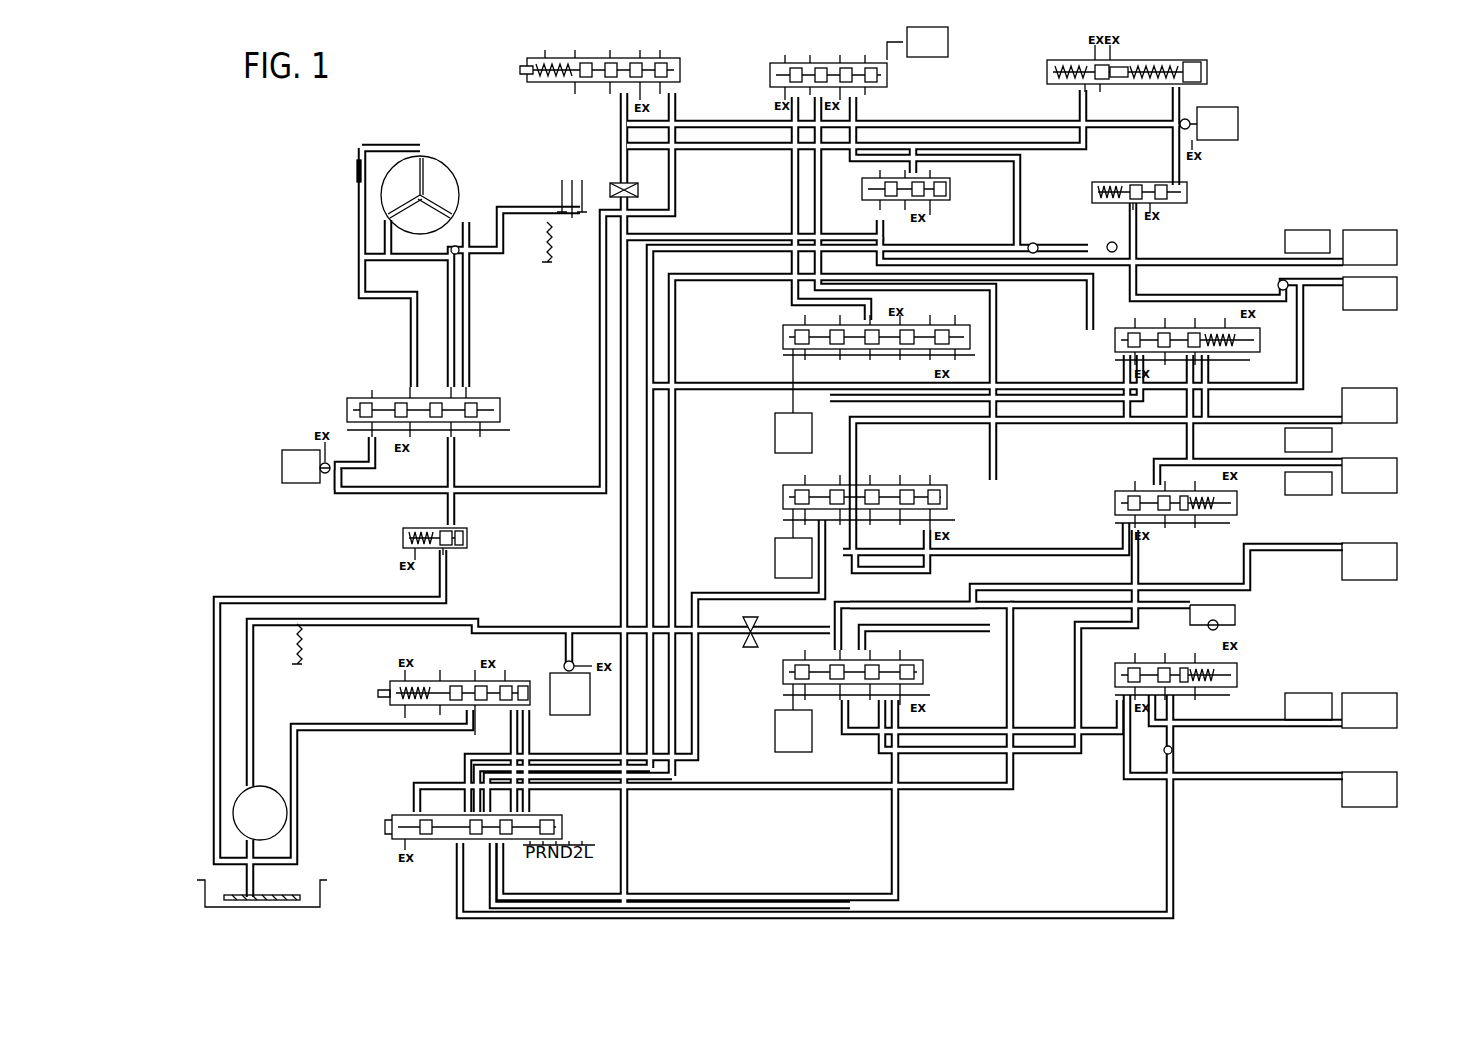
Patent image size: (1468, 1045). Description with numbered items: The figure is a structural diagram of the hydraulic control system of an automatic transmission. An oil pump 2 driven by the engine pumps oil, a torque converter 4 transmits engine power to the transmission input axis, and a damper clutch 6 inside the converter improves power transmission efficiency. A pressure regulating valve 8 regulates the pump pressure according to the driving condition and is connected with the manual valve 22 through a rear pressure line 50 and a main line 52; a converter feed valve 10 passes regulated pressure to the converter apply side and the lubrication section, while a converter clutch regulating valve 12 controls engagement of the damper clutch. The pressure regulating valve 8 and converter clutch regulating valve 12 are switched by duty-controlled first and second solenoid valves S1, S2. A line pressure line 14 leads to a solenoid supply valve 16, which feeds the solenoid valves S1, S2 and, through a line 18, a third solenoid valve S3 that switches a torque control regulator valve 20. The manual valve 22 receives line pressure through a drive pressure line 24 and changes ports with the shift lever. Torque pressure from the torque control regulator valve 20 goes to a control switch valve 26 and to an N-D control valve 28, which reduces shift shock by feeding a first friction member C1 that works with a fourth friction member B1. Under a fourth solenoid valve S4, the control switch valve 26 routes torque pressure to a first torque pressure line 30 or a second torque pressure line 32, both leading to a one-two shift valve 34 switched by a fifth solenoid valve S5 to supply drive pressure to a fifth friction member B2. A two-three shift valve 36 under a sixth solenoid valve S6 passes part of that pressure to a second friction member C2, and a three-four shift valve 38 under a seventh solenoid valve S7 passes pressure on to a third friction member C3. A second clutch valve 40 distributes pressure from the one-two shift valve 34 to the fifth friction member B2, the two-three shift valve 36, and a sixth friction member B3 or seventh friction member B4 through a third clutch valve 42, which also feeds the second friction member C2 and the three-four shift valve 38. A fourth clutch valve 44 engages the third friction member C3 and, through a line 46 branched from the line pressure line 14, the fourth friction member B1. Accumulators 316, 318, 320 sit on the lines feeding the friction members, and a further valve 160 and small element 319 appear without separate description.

The oil pump 2 is at (233, 815).
The torque converter 4 is at (450, 152).
The damper clutch 6 is at (358, 180).
The pressure regulating valve 8 is at (388, 693).
The converter feed valve 10 is at (400, 540).
The converter clutch regulating valve 12 is at (505, 412).
The line pressure line 14 is at (620, 300).
The solenoid supply valve 16 is at (690, 74).
The line 18 is at (987, 121).
The torque control regulator valve 20 is at (1212, 73).
The manual valve 22 is at (392, 827).
The drive pressure line 24 is at (603, 764).
The control switch valve 26 is at (900, 75).
The N-D control valve 28 is at (955, 188).
The first torque pressure line 30 is at (790, 165).
The second torque pressure line 32 is at (823, 165).
The 1-2 shift valve 34 is at (780, 338).
The 2-3 shift valve 36 is at (780, 500).
The 3-4 shift valve 38 is at (780, 672).
The second clutch valve 40 is at (1112, 340).
The third clutch valve 42 is at (1112, 502).
The fourth clutch valve 44 is at (1245, 665).
The line 46 is at (1175, 850).
The rear pressure line 50 is at (676, 530).
The main line 52 is at (531, 737).
The accumulator control valve 160 is at (1192, 193).
The accumulator 316 is at (1310, 230).
The accumulator 318 is at (1333, 443).
The accumulator 319 is at (1307, 496).
The accumulator 320 is at (1307, 693).
The first solenoid valve S1 is at (571, 690).
The second solenoid valve S2 is at (306, 462).
The third solenoid valve S3 is at (1214, 128).
The fourth solenoid valve S4 is at (927, 42).
The fifth solenoid valve S5 is at (793, 433).
The sixth solenoid valve S6 is at (793, 558).
The seventh solenoid valve S7 is at (793, 731).
The first friction member C1 is at (1397, 248).
The second friction member C2 is at (1397, 561).
The third friction member C3 is at (1397, 790).
The fourth friction member B1 is at (1397, 711).
The fifth friction member B2 is at (1397, 406).
The sixth friction member B3 is at (1397, 294).
The seventh friction member B4 is at (1397, 476).